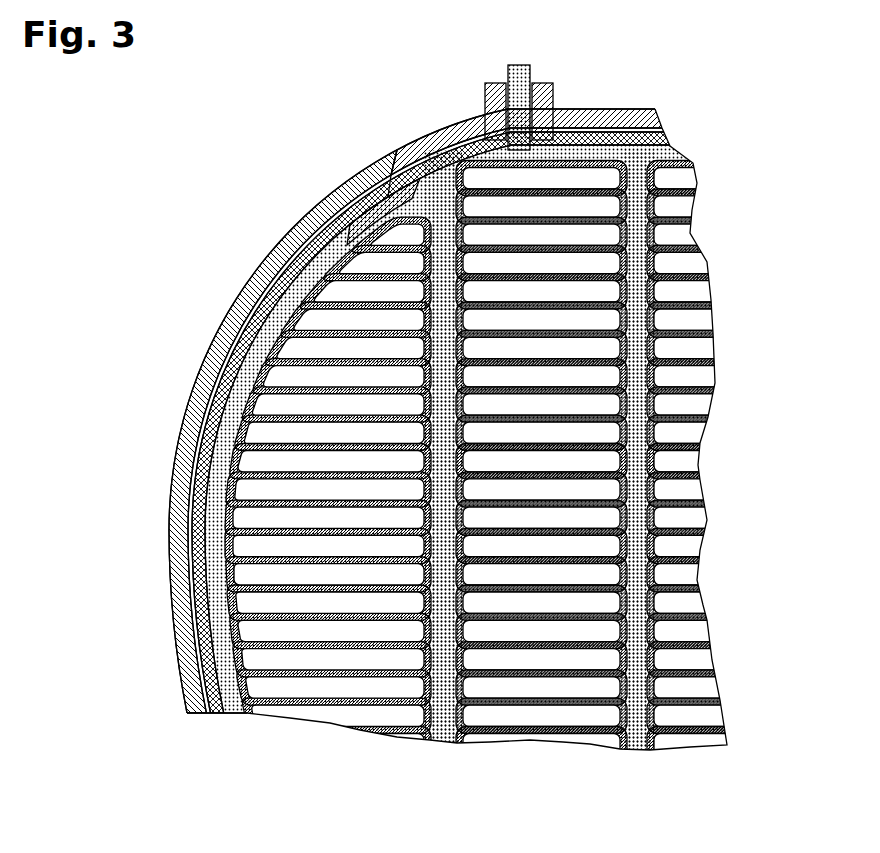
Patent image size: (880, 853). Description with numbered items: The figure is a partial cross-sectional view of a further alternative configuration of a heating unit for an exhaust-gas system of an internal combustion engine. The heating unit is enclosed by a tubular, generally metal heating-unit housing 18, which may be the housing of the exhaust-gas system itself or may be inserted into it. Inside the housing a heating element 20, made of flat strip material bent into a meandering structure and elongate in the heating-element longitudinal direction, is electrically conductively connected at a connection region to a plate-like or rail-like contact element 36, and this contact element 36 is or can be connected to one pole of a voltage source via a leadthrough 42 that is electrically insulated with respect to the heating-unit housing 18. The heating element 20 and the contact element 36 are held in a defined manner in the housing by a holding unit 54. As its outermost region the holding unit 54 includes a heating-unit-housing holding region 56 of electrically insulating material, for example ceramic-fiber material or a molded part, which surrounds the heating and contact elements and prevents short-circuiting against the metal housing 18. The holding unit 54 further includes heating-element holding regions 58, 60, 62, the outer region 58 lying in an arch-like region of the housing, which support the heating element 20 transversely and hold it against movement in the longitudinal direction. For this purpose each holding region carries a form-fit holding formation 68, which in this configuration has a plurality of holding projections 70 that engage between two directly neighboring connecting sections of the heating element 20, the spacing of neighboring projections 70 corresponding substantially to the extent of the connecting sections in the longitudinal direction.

The heating-unit housing 18 is at (232, 320).
The heating element 20 is at (308, 703).
The contact element 36 is at (412, 192).
The leadthrough 42 is at (527, 72).
The holding unit 54 is at (205, 735).
The heating-unit-housing holding region 56 is at (215, 400).
The heating-element holding region 58 is at (215, 515).
The heating-element holding region 60 is at (435, 733).
The heating-element holding region 62 is at (637, 403).
The form-fit holding formation 68 is at (663, 354).
The holding projection 70 is at (600, 489).